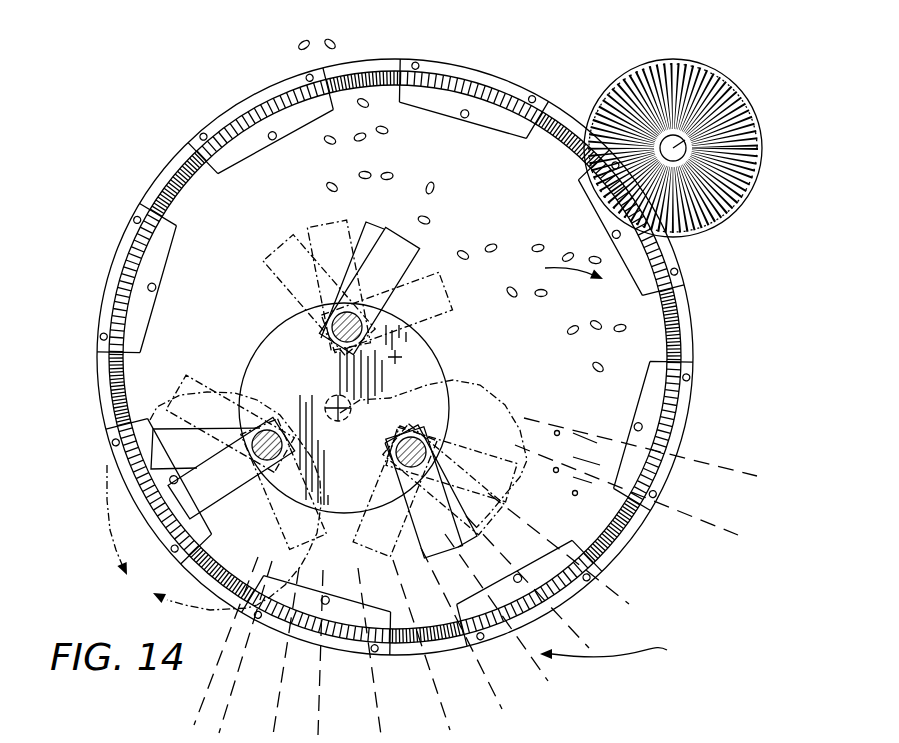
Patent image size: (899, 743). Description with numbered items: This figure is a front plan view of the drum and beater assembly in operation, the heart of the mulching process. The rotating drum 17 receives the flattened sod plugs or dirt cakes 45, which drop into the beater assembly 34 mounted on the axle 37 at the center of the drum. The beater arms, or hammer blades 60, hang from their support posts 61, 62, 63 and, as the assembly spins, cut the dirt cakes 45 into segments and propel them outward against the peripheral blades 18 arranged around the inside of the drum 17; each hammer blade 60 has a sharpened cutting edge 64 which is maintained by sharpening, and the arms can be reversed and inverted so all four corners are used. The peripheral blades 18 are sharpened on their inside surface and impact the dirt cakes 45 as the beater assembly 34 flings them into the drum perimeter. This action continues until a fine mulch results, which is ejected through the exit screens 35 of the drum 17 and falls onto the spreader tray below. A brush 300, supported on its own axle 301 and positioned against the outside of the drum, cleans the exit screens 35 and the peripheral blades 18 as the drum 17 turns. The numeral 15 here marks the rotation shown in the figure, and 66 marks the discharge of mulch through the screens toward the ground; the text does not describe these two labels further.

The direction of rotation arrow 15 is at (214, 501).
The drum 17 is at (172, 290).
The peripheral blades 18 is at (567, 607).
The beater assembly 34 is at (258, 226).
The exit screens 35 is at (440, 637).
The axle 37 is at (452, 383).
The dirt cakes 45 is at (380, 173).
The beater arms 60 is at (430, 500).
The support post 61 is at (323, 318).
The support post 62 is at (433, 433).
The support post 63 is at (277, 432).
The cutting edge 64 is at (393, 560).
The flow direction arrow 66 is at (621, 656).
The brush 300 is at (717, 203).
The axle 301 is at (678, 143).